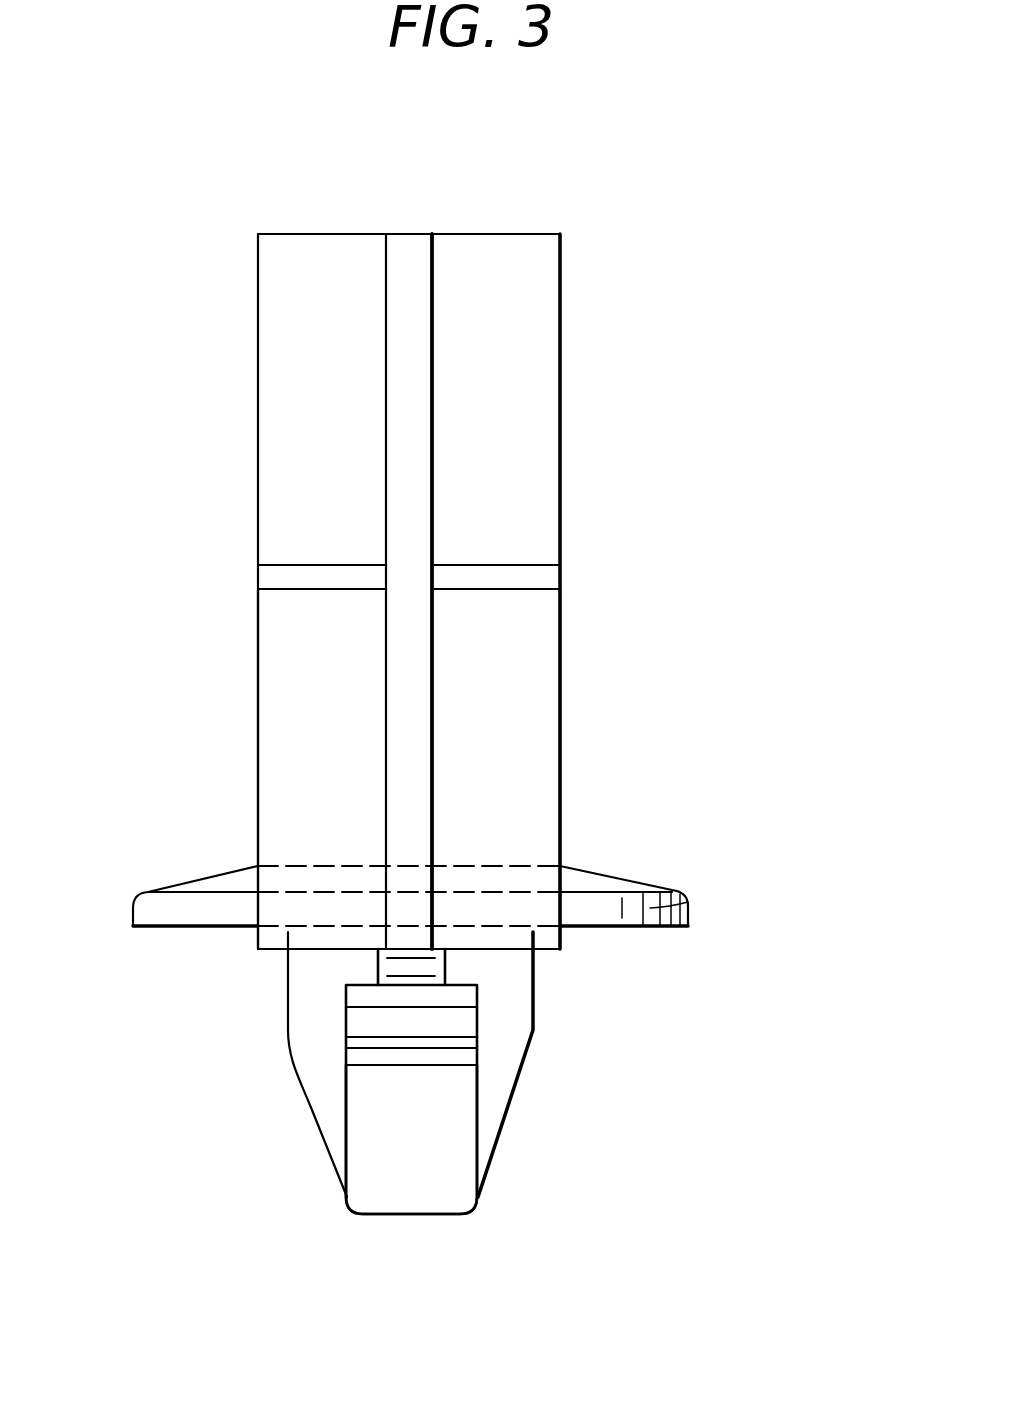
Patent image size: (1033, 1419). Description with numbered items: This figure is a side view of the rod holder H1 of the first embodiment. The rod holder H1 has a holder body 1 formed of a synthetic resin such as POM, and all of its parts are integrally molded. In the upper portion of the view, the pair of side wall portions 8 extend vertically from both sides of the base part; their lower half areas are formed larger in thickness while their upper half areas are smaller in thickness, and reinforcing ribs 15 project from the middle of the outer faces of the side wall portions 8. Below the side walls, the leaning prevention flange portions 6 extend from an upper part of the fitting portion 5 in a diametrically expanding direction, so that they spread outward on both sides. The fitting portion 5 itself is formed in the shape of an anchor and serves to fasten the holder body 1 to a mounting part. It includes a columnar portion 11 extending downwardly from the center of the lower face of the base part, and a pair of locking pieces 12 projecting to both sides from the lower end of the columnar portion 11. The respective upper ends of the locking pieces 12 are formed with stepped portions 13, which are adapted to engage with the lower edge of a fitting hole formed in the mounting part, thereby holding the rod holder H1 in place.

The holder body 1 is at (564, 490).
The fitting portion 5 is at (505, 1124).
The leaning prevention flange portions 6 is at (685, 900).
The side wall portions 8 is at (530, 715).
The columnar portion 11 is at (495, 1005).
The locking pieces 12 is at (430, 1183).
The stepped portions 13 is at (388, 1025).
The reinforcing ribs 15 is at (410, 258).
The rod holder H1 is at (630, 350).